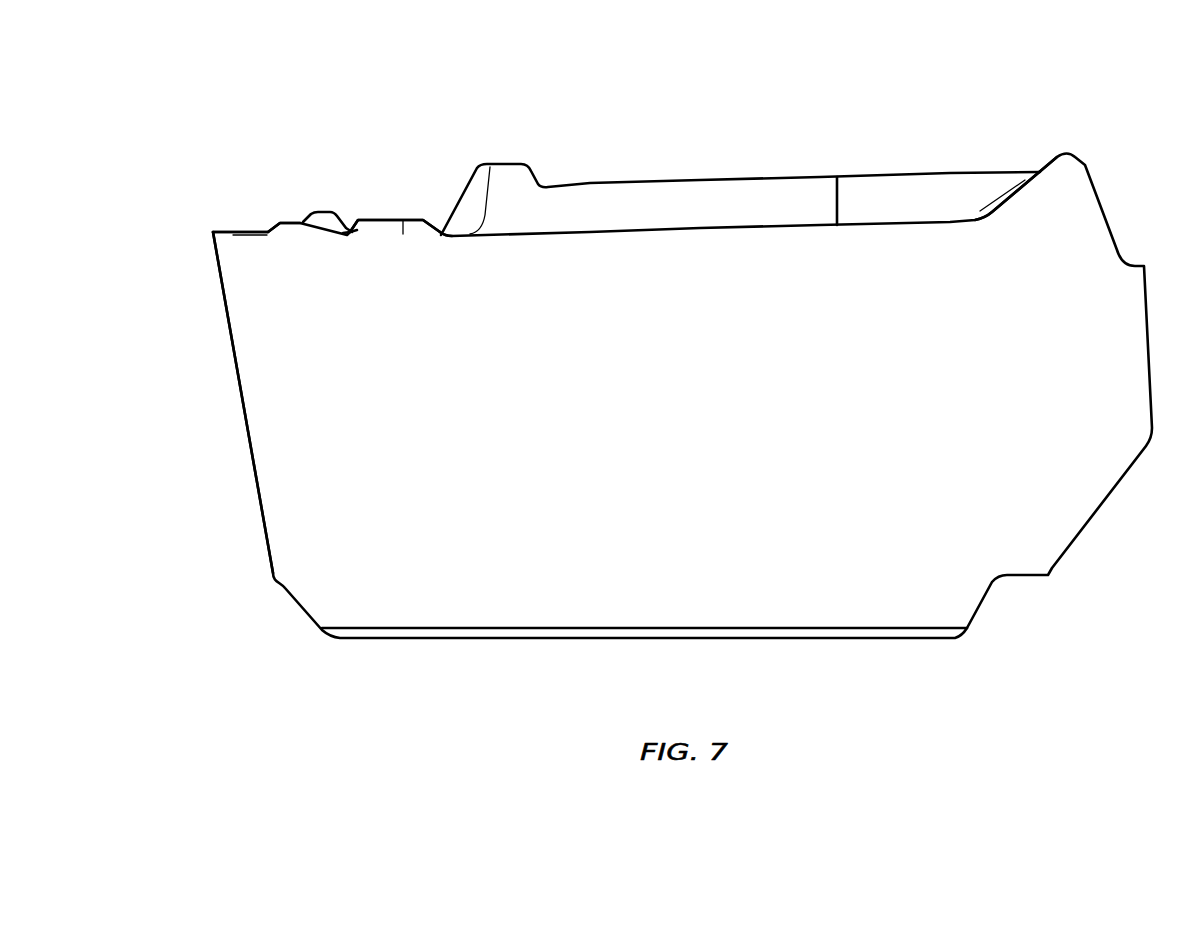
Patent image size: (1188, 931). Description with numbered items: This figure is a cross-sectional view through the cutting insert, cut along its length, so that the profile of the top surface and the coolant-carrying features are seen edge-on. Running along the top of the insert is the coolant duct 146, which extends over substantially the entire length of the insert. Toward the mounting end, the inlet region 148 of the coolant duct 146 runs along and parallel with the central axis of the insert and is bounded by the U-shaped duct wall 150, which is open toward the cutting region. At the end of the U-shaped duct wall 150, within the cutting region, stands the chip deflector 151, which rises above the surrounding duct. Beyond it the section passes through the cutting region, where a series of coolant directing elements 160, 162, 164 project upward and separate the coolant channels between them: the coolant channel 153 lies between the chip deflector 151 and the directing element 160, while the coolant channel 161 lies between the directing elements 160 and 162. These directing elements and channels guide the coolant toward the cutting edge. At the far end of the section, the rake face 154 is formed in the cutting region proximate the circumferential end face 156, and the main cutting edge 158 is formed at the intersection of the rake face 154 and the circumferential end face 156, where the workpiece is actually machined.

The coolant duct 146 is at (612, 217).
The inlet region 148 is at (1019, 176).
The U-shaped duct wall 150 is at (724, 203).
The chip deflector 151 is at (507, 163).
The coolant channel 153 is at (443, 233).
The rake face 154 is at (245, 234).
The circumferential end face 156 is at (242, 400).
The main cutting edge 158 is at (213, 231).
The coolant directing element 160 is at (368, 221).
The coolant channel 161 is at (352, 231).
The coolant directing element 162 is at (318, 212).
The coolant directing element 164 is at (298, 223).